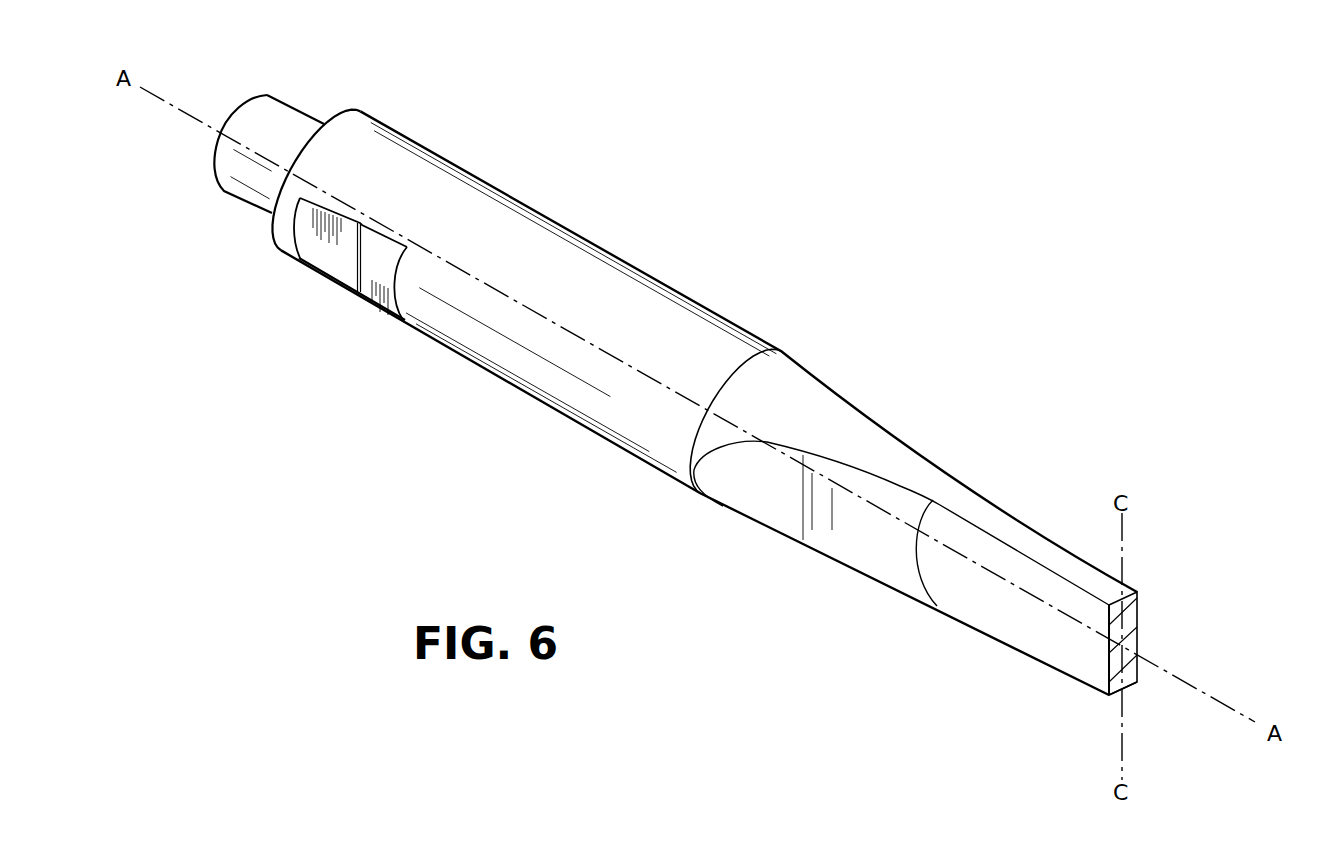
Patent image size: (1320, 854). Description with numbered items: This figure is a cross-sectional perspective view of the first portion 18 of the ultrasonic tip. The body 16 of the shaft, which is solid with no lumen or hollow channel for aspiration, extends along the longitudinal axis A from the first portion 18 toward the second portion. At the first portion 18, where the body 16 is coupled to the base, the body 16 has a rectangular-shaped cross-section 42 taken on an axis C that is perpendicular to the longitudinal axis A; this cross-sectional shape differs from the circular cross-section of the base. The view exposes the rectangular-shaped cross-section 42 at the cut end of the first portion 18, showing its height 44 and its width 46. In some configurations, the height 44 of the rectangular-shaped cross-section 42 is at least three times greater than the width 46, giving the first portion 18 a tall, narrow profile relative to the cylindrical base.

The body 16 is at (861, 553).
The first portion 18 is at (966, 632).
The rectangular-shaped cross-section 42 is at (1106, 654).
The height 44 is at (1138, 641).
The width 46 is at (1130, 687).